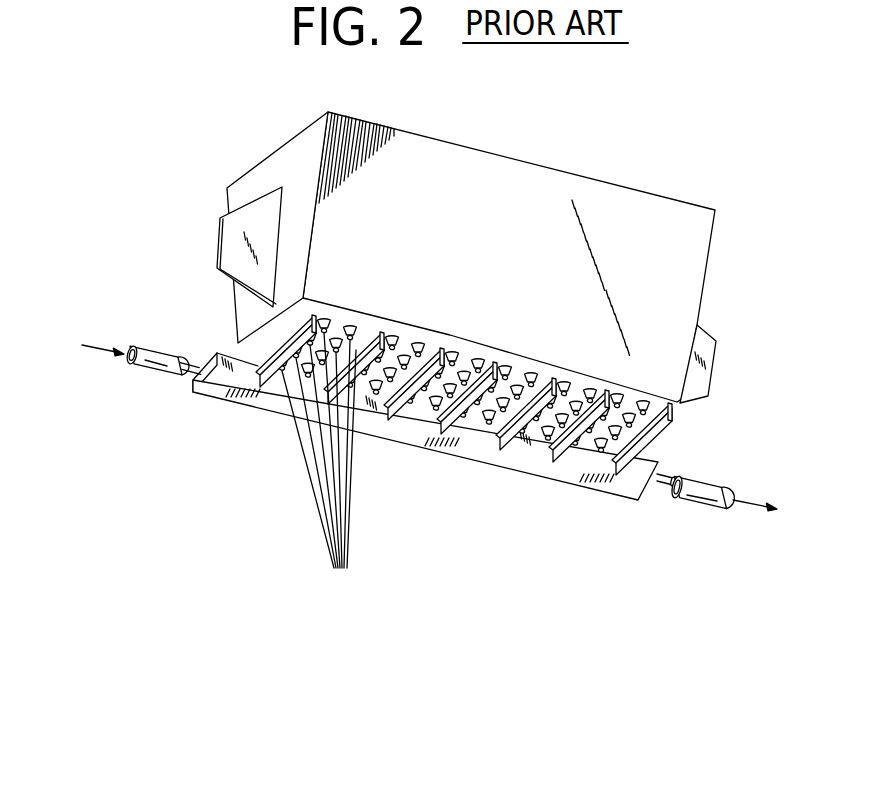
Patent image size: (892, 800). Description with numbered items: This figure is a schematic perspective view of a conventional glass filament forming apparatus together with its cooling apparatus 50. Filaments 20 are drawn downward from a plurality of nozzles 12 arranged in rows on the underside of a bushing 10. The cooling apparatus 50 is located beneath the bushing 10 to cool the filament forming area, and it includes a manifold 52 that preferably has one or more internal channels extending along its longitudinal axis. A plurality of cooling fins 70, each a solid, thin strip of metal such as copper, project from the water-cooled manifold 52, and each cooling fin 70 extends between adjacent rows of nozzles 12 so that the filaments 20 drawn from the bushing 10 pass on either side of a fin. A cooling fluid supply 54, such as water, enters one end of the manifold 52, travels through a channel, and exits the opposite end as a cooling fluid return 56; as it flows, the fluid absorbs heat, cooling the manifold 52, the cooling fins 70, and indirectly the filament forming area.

The bushing 10 is at (607, 181).
The nozzles 12 is at (418, 352).
The cooling fins 70 is at (557, 372).
The filaments 20 is at (347, 527).
The cooling apparatus 50 is at (431, 423).
The manifold 52 is at (268, 402).
The cooling fluid supply 54 is at (102, 348).
The cooling fluid return 56 is at (747, 497).